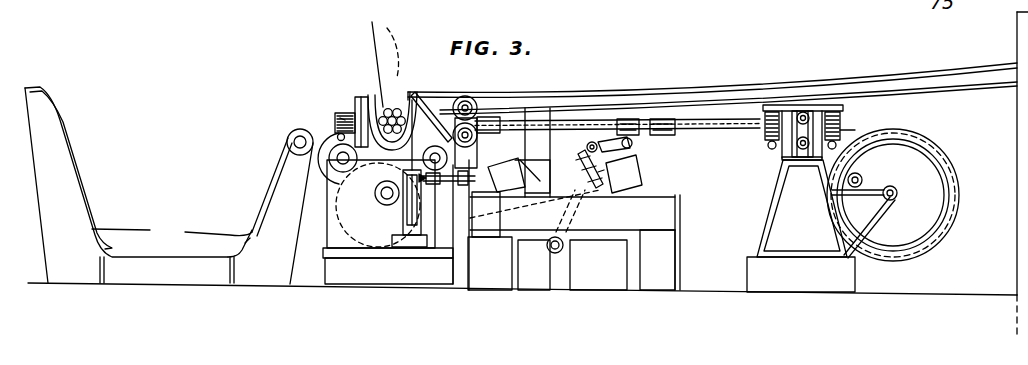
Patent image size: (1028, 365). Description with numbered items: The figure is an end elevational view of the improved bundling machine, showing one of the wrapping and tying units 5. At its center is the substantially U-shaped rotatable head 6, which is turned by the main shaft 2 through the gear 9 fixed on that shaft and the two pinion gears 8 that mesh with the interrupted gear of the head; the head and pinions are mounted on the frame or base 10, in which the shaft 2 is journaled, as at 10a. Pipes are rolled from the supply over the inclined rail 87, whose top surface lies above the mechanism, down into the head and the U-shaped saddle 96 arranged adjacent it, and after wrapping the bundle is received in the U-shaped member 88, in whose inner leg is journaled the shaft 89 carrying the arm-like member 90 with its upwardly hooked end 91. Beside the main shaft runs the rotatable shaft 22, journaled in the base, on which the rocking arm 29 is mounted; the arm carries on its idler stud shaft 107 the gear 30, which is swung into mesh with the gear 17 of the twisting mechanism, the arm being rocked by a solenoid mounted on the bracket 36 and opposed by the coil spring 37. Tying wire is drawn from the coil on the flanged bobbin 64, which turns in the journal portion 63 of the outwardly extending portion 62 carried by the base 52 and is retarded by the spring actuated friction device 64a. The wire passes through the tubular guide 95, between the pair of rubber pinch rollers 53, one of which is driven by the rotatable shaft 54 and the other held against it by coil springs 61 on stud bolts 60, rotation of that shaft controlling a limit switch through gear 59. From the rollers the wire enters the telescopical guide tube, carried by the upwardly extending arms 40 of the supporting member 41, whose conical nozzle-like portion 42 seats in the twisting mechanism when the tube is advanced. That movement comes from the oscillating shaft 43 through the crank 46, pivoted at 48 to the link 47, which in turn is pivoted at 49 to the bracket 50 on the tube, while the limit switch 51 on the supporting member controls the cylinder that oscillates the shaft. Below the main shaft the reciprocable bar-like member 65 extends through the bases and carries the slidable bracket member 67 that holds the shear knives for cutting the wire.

The shaft 2 is at (382, 203).
The wrapping and tying unit 5 is at (336, 108).
The rotatable head 6 is at (380, 100).
The pinion gear 8 is at (330, 165).
The gear 9 is at (382, 197).
The frame or base 10 is at (330, 221).
The journal 10a is at (337, 228).
The gear 17 is at (338, 118).
The rotatable shaft 22 is at (480, 127).
The rocking arm 29 is at (518, 136).
The gear 30 is at (461, 98).
The bracket 36 is at (462, 210).
The coil spring 37 is at (440, 246).
The upwardly extending arm 40 is at (482, 163).
The supporting member or base 41 is at (660, 222).
The conical-shaped nozzle-like portion 42 is at (443, 117).
The shaft 43 is at (558, 252).
The crank 46 is at (578, 195).
The link 47 is at (605, 140).
The pivot 48 is at (587, 146).
The pivot 49 is at (642, 150).
The bracket 50 is at (633, 120).
The limit switch 51 is at (622, 184).
The base or supporting member 52 is at (795, 240).
The pinch rollers 53 is at (805, 111).
The rotatable shaft 54 is at (797, 145).
The gear 59 is at (567, 121).
The stud bolt 60 is at (768, 141).
The coil spring 61 is at (763, 113).
The outwardly extending portion 62 is at (875, 213).
The journal portion 63 is at (898, 195).
The flanged bobbin or drum 64 is at (891, 132).
The spring actuated friction device 64a is at (861, 175).
The reciprocable bar-like member 65 is at (410, 238).
The bracket member 67 is at (387, 216).
The inclined rail 87 is at (757, 82).
The U-shaped member 88 is at (163, 256).
The shaft 89 is at (296, 146).
The arm-like member 90 is at (368, 97).
The hooked end 91 is at (393, 35).
The tubular guide 95 is at (859, 176).
The saddle 96 is at (369, 55).
The idler stud shaft 107 is at (472, 117).